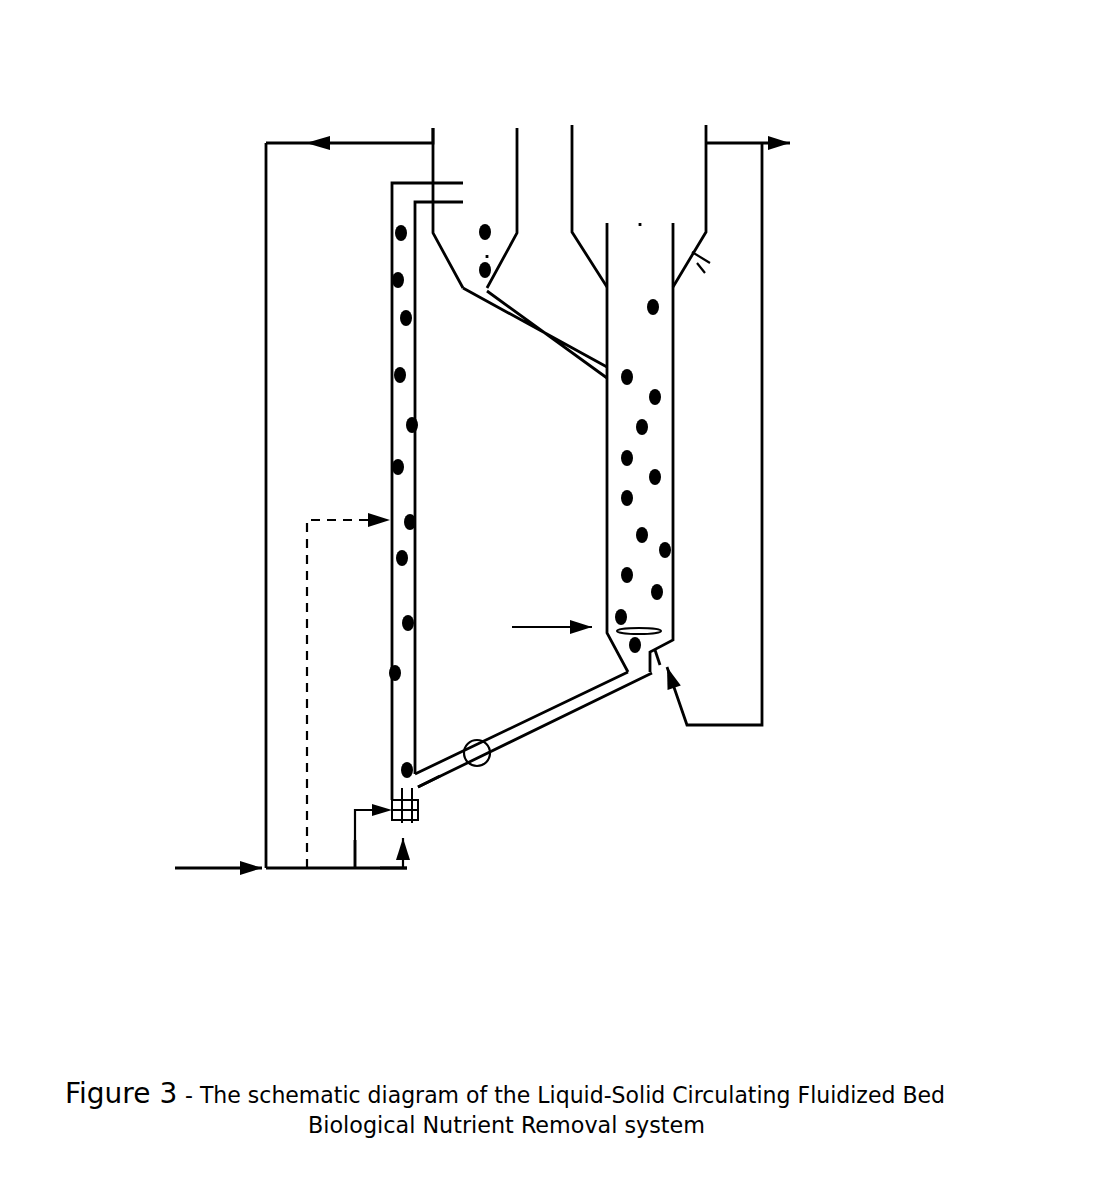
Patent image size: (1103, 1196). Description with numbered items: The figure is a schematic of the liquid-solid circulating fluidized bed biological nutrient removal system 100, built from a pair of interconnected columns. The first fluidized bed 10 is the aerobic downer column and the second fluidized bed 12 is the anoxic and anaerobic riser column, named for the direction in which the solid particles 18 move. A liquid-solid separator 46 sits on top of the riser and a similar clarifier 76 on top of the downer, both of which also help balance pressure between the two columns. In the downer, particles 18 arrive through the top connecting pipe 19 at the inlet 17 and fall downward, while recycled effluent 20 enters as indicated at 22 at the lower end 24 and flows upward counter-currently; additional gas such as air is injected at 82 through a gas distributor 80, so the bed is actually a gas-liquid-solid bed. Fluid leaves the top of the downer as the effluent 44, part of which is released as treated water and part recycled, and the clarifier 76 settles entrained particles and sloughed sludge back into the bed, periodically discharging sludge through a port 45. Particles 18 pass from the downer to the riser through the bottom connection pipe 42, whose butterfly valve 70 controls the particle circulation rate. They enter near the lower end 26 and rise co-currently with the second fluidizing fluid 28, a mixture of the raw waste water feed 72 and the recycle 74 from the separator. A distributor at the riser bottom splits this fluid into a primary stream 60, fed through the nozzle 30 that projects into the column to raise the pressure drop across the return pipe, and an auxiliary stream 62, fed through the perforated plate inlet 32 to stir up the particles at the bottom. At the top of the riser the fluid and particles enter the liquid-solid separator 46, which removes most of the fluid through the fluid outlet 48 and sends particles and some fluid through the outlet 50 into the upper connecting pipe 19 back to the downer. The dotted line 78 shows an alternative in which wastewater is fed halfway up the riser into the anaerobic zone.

The liquid-solid circulating fluidized bed biological nutrient removal system 100 is at (185, 132).
The first fluidized bed 10 is at (690, 495).
The second fluidized bed 12 is at (403, 492).
The inlet 17 is at (660, 360).
The solid particles 18 is at (392, 279).
The top connecting pipe 19 is at (525, 332).
The recycled effluent 20 is at (765, 690).
The recycled effluent entry 22 is at (645, 655).
The lower end of the bed 24 is at (672, 651).
The lower end of the bed 26 is at (420, 792).
The second fluidizing fluid 28 is at (327, 880).
The nozzle 30 is at (416, 786).
The inlet 32 is at (388, 797).
The bottom connection pipe 42 is at (535, 716).
The effluent 44 is at (818, 132).
The port 45 is at (703, 255).
The liquid-solid separator 46 is at (463, 170).
The fluid outlet 48 is at (353, 137).
The outlet 50 is at (481, 278).
The primary stream 60 is at (390, 883).
The auxiliary stream 62 is at (343, 843).
The butterfly valve 70 is at (490, 765).
The raw waste water feed 72 is at (157, 862).
The recycle 74 is at (258, 700).
The clarifier 76 is at (655, 152).
The dotted line 78 is at (302, 632).
The gas distributor 80 is at (652, 623).
The gas injection 82 is at (513, 617).